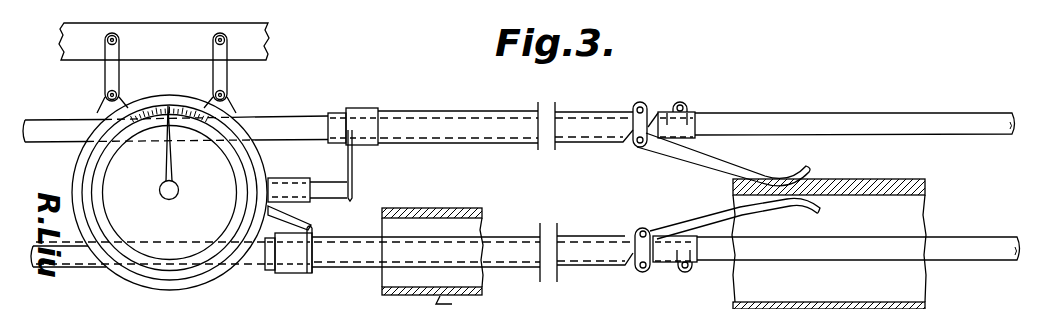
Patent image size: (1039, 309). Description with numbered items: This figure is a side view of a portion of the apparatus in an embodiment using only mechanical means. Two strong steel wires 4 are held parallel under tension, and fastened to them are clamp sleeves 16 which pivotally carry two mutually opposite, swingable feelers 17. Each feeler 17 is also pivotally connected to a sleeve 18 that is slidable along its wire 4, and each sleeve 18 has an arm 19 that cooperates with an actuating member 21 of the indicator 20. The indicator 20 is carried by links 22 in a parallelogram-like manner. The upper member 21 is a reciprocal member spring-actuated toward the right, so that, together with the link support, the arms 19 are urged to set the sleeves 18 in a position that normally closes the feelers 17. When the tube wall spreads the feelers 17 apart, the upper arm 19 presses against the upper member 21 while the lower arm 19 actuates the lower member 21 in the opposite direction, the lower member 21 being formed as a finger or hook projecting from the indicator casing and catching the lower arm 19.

The steel wire 4 is at (950, 118).
The clamp sleeve 16 is at (665, 112).
The feeler 17 is at (717, 157).
The sleeve 18 is at (513, 112).
The arm 19 is at (354, 170).
The indicator 20 is at (72, 188).
The actuating member 21 is at (320, 186).
The link 22 is at (212, 77).